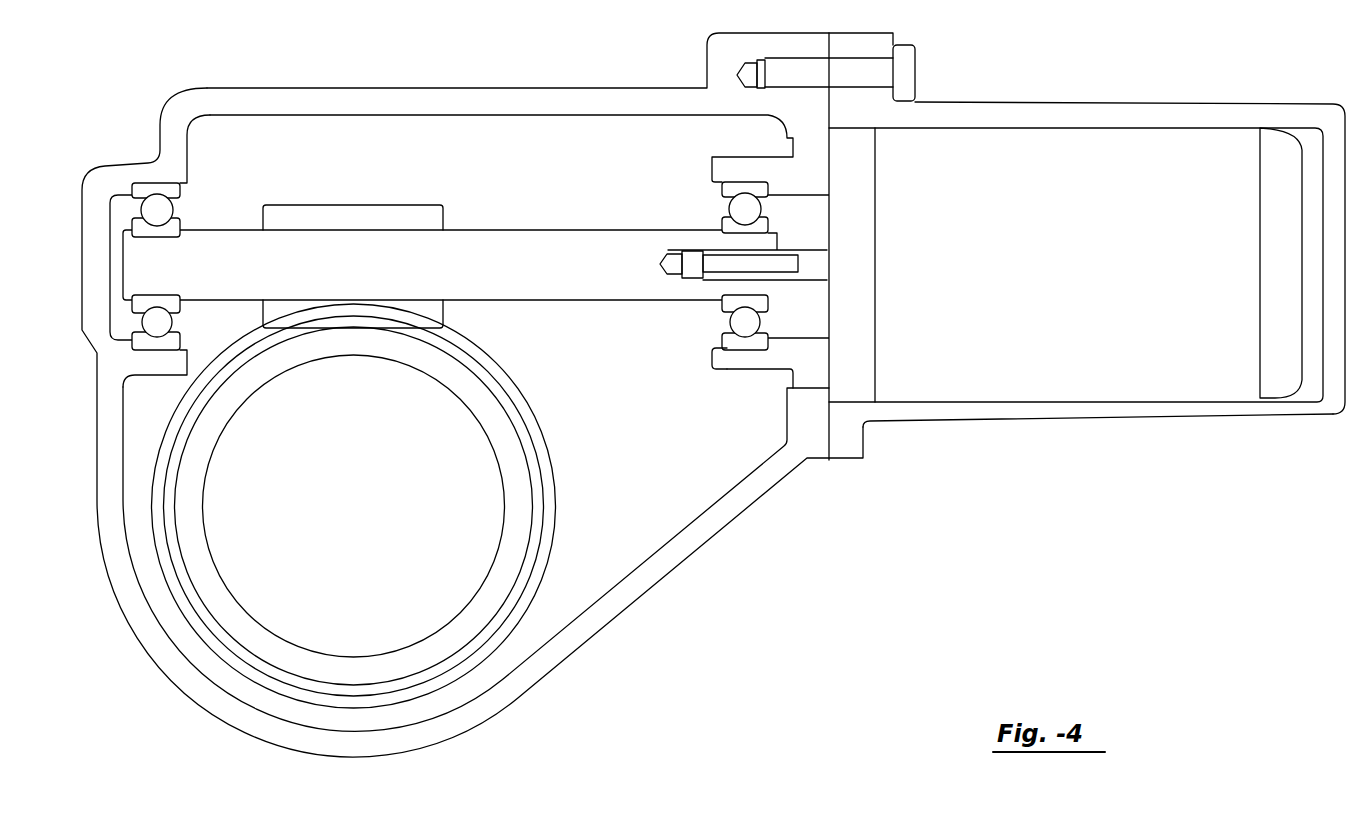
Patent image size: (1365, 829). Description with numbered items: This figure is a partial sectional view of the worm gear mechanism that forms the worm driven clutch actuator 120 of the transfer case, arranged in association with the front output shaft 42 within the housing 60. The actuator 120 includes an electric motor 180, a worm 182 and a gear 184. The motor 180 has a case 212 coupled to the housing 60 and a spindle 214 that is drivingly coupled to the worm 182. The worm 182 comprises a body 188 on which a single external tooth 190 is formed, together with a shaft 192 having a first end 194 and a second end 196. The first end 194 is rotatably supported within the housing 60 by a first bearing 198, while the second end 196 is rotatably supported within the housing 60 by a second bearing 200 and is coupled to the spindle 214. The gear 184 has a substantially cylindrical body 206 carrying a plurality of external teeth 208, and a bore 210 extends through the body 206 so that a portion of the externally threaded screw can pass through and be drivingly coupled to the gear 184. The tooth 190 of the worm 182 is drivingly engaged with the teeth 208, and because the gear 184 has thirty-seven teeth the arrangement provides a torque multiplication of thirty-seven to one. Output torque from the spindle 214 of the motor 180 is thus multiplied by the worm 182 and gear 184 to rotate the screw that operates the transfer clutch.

The front output shaft 42 is at (229, 680).
The housing 60 is at (622, 102).
The worm driven clutch actuator 120 is at (716, 590).
The electric motor 180 is at (1053, 415).
The worm 182 is at (471, 197).
The gear 184 is at (503, 423).
The body 188 is at (291, 217).
The external tooth 190 is at (342, 203).
The shaft 192 is at (547, 231).
The first end 194 is at (140, 268).
The second end 196 is at (766, 284).
The first bearing 198 is at (142, 345).
The second bearing 200 is at (732, 343).
The cylindrical body 206 is at (484, 402).
The external teeth 208 is at (550, 468).
The bore 210 is at (458, 622).
The case 212 is at (957, 415).
The spindle 214 is at (812, 257).